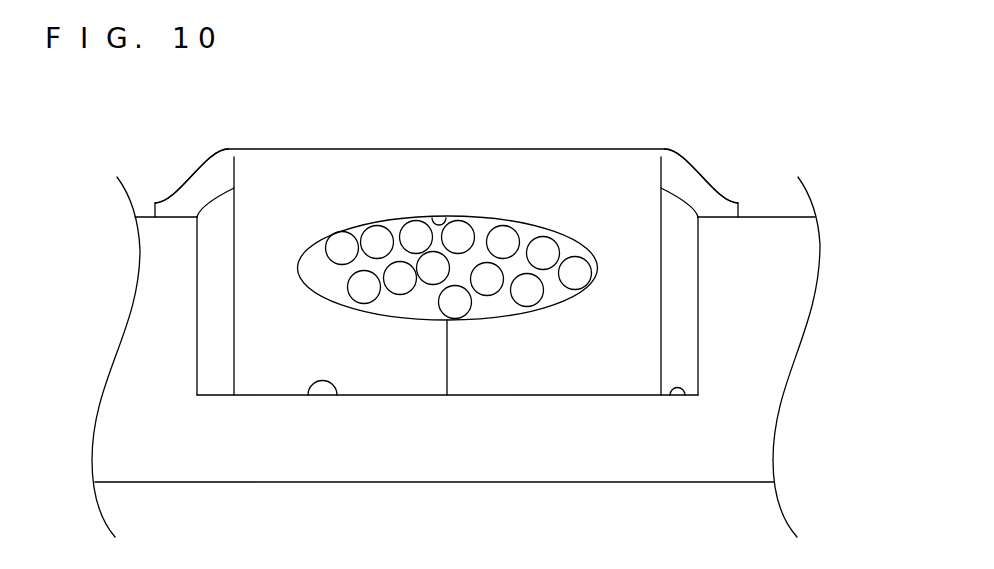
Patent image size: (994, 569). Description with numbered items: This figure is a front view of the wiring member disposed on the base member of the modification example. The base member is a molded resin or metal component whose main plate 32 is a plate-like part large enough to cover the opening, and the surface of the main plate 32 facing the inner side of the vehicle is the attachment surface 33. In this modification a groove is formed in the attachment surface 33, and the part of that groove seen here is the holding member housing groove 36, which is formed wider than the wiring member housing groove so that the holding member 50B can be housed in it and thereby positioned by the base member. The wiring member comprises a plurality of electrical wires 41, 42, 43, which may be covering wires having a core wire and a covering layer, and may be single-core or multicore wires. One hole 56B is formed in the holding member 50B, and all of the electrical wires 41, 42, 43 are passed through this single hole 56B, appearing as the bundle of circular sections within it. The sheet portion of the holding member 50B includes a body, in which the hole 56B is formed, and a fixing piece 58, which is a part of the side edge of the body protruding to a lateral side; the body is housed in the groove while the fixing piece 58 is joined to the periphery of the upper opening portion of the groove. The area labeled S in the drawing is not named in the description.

The holding member 50B is at (300, 149).
The fixing piece 58 is at (195, 192).
The hole 56B is at (445, 218).
The electrical wire 41 is at (457, 227).
The electrical wire 42 is at (502, 227).
The electrical wire 43 is at (543, 238).
The space S is at (445, 370).
The holding member housing groove 36 is at (679, 396).
The attachment surface 33 is at (336, 396).
The main plate 32 is at (435, 467).